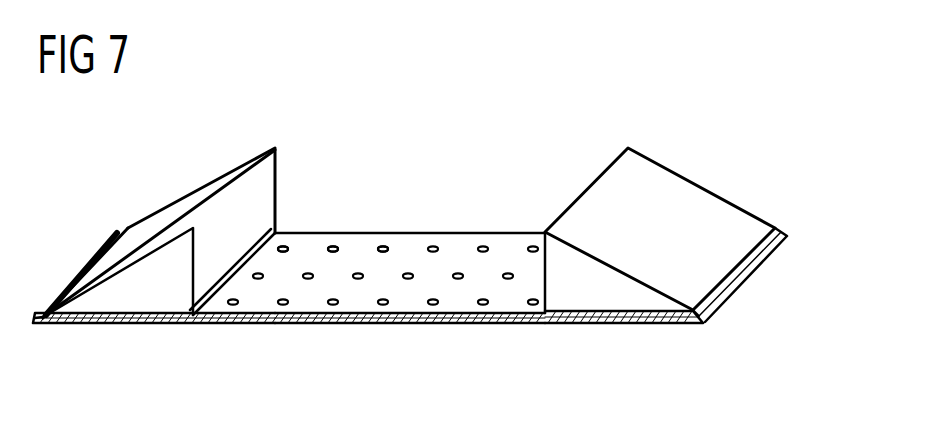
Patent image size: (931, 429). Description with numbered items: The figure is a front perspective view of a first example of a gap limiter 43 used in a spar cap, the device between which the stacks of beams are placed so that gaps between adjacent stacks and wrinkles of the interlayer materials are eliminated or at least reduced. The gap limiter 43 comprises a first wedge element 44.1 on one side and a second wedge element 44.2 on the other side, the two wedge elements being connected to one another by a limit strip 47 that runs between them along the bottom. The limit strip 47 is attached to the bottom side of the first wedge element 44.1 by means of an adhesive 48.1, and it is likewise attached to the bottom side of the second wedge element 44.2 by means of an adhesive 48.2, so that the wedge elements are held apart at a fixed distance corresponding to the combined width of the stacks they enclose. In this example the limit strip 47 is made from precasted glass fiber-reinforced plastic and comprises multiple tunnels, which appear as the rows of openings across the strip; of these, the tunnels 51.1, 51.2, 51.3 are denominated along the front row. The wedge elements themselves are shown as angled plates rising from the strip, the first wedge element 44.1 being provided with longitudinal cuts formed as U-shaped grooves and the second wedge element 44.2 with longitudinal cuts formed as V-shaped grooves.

The gap limiter 43 is at (502, 142).
The first wedge element 44.1 is at (198, 198).
The second wedge element 44.2 is at (655, 175).
The limit strip 47 is at (357, 308).
The adhesive 48.1 is at (127, 318).
The adhesive 48.2 is at (613, 320).
The tunnel 51.1 is at (283, 242).
The tunnel 51.2 is at (333, 240).
The tunnel 51.3 is at (383, 240).